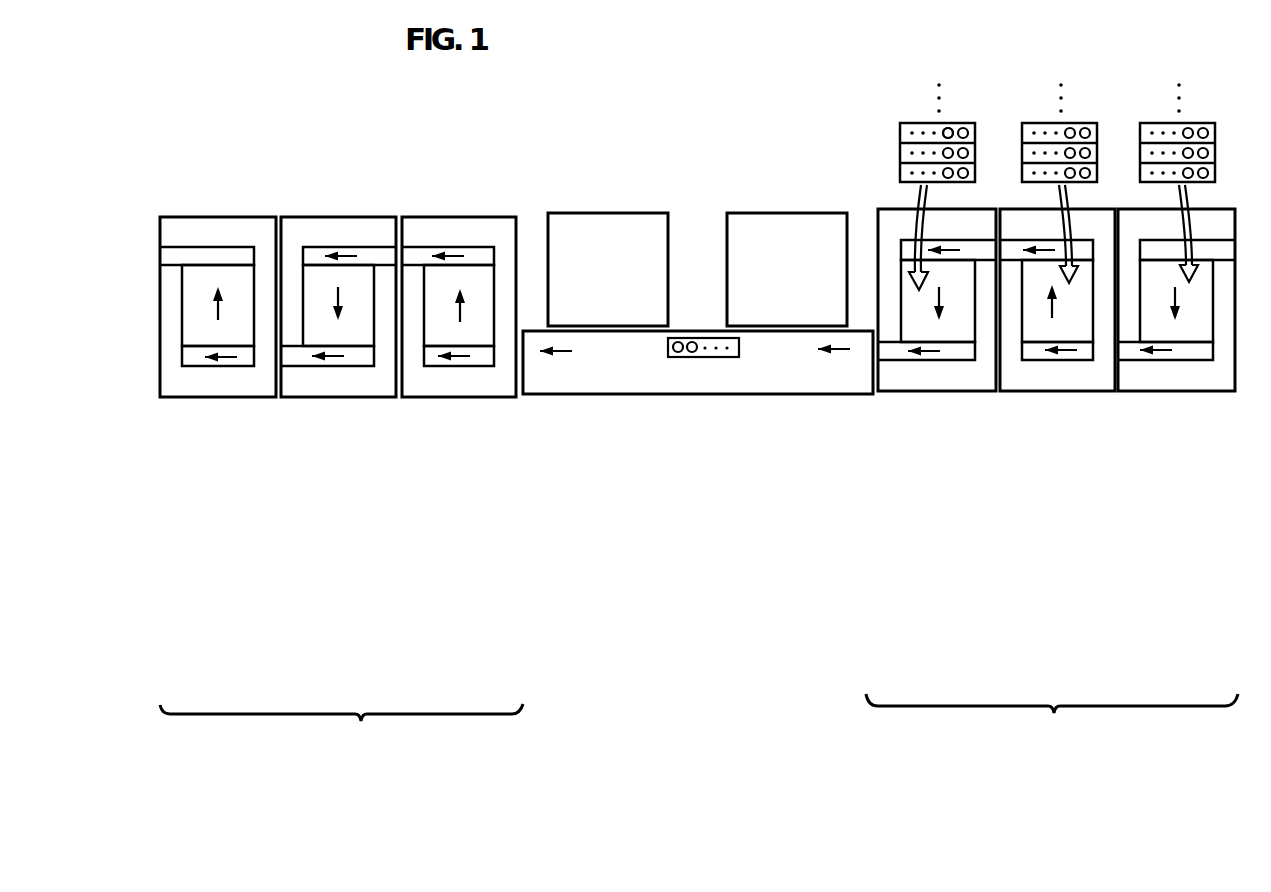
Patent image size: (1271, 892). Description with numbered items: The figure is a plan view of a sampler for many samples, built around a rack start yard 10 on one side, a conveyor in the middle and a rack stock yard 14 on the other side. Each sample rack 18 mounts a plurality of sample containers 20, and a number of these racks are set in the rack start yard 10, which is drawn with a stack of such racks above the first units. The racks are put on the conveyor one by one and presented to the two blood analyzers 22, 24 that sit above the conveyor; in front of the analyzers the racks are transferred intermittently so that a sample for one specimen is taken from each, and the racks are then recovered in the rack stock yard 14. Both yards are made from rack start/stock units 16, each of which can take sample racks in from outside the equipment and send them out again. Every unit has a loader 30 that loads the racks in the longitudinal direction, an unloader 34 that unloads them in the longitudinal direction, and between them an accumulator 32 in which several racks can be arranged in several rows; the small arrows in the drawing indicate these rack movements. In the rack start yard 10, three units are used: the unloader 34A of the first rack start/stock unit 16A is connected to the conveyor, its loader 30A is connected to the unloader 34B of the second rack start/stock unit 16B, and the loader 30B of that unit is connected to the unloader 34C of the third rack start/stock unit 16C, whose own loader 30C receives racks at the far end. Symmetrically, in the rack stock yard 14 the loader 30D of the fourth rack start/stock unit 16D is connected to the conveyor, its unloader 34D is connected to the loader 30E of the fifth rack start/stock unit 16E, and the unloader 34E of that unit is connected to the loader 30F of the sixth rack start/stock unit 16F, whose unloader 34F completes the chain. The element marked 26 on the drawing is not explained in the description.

The rack start yard 10 is at (1052, 730).
The rack stock yard 14 is at (341, 738).
The rack start/stock unit 16 is at (942, 326).
The first rack start/stock unit 16A is at (937, 300).
The second rack start/stock unit 16B is at (1082, 274).
The third rack start/stock unit 16C is at (1186, 308).
The fourth rack start/stock unit 16D is at (475, 332).
The fifth rack start/stock unit 16E is at (340, 332).
The sixth rack start/stock unit 16F is at (197, 332).
The sample rack 18 is at (900, 134).
The sample container 20 is at (944, 130).
The blood analyzer 22 is at (785, 228).
The blood analyzer 24 is at (612, 224).
The conveyor 26 is at (668, 357).
The loader 30 is at (978, 146).
The loader 30A is at (976, 248).
The loader 30B is at (1030, 355).
The loader 30C is at (1216, 247).
The loader 30D is at (487, 357).
The loader 30E is at (378, 247).
The loader 30F is at (195, 361).
The accumulator 32 is at (953, 323).
The unloader 34 is at (933, 398).
The unloader 34A is at (957, 361).
The unloader 34B is at (1013, 247).
The unloader 34C is at (1132, 358).
The unloader 34D is at (495, 247).
The unloader 34E is at (359, 360).
The unloader 34F is at (221, 252).